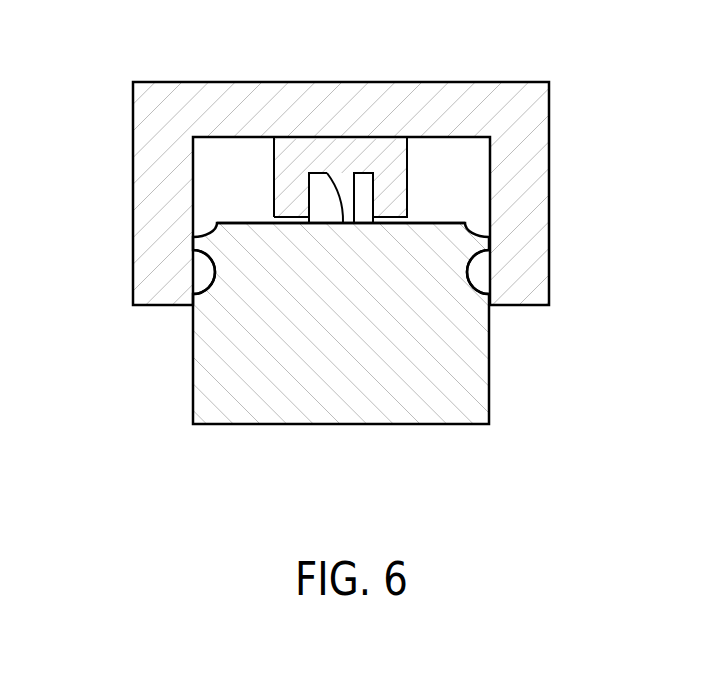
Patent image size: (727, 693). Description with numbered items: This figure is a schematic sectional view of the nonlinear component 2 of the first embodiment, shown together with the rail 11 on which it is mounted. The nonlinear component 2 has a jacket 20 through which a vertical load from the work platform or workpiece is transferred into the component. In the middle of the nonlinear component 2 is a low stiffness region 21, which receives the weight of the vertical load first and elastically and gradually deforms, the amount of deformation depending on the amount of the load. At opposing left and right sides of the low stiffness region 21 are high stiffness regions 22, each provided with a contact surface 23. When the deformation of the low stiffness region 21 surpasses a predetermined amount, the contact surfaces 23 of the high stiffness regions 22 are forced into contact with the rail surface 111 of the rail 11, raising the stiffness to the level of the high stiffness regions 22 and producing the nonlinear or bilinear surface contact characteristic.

The nonlinear component 2 is at (363, 153).
The jacket 20 is at (225, 110).
The low stiffness region 21 is at (347, 200).
The high stiffness regions 22 is at (292, 205).
The contact surfaces 23 is at (315, 193).
The rail 11 is at (430, 366).
The rail surface 111 is at (412, 242).